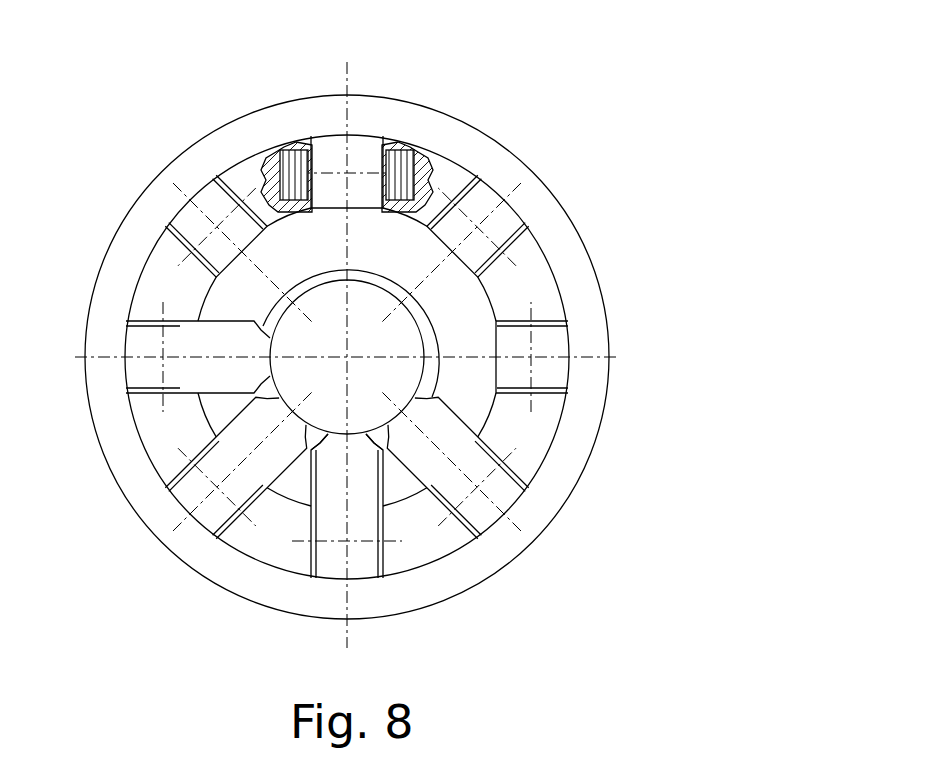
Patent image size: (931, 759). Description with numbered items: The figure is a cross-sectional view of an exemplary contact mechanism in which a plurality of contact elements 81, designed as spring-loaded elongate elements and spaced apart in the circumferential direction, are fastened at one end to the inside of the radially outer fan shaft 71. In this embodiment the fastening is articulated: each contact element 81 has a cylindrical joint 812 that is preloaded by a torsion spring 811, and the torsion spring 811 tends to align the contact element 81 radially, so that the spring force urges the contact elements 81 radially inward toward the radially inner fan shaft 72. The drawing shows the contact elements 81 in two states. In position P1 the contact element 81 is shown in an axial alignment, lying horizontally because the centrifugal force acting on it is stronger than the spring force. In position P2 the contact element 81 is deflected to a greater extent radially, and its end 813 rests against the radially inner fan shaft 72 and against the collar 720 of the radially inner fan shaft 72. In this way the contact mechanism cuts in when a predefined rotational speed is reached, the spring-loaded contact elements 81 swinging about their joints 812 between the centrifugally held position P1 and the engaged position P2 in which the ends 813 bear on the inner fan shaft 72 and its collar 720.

The radially outer fan shaft 71 is at (250, 137).
The radially inner fan shaft 72 is at (374, 283).
The collar 720 is at (262, 307).
The contact element 81 is at (507, 220).
The torsion spring 811 is at (393, 141).
The cylindrical joint 812 is at (427, 147).
The end of contact element 813 is at (351, 434).
The position P1 is at (458, 271).
The position P2 is at (446, 393).